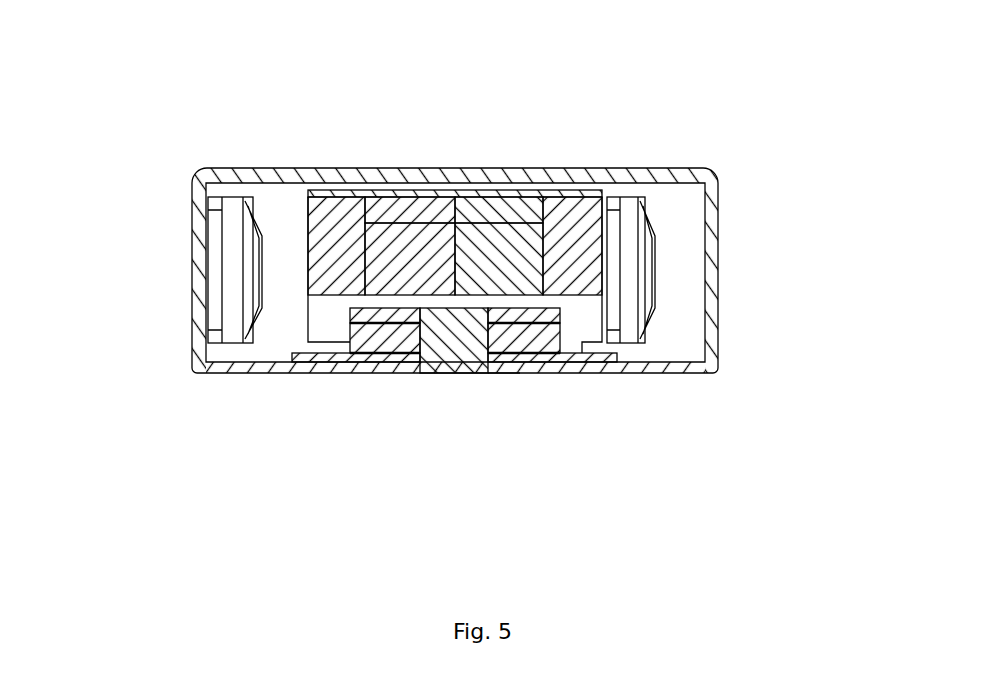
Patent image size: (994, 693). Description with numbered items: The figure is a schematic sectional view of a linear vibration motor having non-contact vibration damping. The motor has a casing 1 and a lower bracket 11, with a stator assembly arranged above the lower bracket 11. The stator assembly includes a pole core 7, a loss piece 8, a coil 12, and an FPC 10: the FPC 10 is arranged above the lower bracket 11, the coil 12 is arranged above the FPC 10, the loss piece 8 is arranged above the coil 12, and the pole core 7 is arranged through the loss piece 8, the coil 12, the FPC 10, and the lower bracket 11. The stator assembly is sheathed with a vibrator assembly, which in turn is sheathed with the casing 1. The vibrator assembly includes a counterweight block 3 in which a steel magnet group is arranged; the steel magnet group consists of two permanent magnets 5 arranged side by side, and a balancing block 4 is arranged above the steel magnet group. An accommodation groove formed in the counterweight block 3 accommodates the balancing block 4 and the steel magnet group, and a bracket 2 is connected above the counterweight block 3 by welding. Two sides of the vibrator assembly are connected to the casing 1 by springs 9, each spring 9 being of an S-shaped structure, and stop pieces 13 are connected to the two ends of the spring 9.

The casing 1 is at (257, 168).
The bracket 2 is at (312, 186).
The counterweight block 3 is at (592, 278).
The balancing block 4 is at (543, 207).
The permanent magnet 5 is at (507, 262).
The pole core 7 is at (462, 352).
The loss piece 8 is at (352, 315).
The spring 9 is at (663, 272).
The FPC 10 is at (590, 360).
The lower bracket 11 is at (498, 376).
The coil 12 is at (378, 342).
The stop piece 13 is at (217, 277).